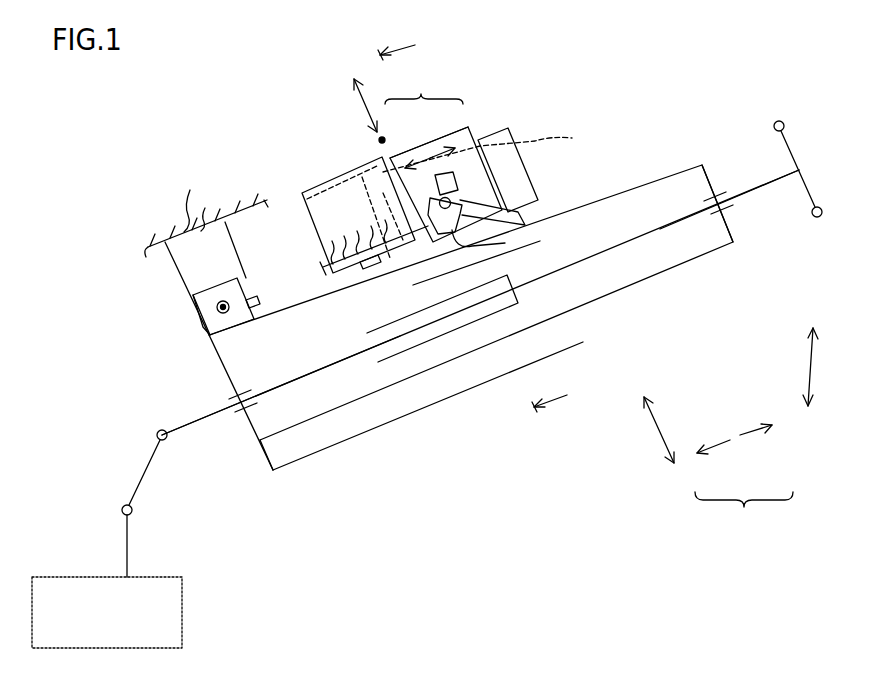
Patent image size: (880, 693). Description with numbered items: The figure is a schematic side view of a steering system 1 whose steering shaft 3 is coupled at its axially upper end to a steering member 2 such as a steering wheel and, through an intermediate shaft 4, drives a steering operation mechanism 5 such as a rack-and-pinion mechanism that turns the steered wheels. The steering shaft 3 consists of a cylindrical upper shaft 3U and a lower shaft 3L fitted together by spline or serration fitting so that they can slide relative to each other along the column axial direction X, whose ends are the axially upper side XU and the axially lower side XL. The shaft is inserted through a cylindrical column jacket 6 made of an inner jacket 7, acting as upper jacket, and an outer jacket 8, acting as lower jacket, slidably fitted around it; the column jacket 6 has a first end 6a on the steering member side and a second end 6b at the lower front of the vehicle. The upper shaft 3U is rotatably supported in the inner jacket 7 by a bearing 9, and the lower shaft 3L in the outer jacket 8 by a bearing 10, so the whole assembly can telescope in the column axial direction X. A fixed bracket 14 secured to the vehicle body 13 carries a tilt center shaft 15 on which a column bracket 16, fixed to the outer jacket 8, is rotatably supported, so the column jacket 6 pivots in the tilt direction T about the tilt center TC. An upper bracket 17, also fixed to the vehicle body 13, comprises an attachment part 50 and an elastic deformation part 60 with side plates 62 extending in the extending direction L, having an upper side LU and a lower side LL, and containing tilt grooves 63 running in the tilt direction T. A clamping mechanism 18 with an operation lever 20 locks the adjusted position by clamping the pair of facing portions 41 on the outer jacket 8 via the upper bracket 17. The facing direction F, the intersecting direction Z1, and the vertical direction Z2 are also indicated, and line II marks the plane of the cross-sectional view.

The steering system 1 is at (708, 112).
The steering member 2 is at (794, 152).
The steering shaft 3 is at (754, 188).
The upper shaft 3U is at (670, 223).
The lower shaft 3L is at (333, 364).
The intermediate shaft 4 is at (143, 468).
The steering operation mechanism 5 is at (183, 602).
The column jacket 6 is at (670, 270).
The first end 6a is at (733, 252).
The second end 6b is at (274, 472).
The inner jacket 7 is at (611, 300).
The outer jacket 8 is at (334, 449).
The bearing 9 is at (721, 198).
The bearing 10 is at (233, 400).
The vehicle body 13 is at (286, 218).
The fixed bracket 14 is at (221, 252).
The tilt center shaft 15 is at (217, 302).
The column bracket 16 is at (250, 303).
The upper bracket 17 is at (477, 118).
The clamping mechanism 18 is at (477, 188).
The operation lever 20 is at (524, 214).
The facing portions 41 is at (541, 167).
The attachment part 50 is at (313, 188).
The elastic deformation part 60 is at (502, 193).
The side plates 62 is at (471, 143).
The tilt grooves 63 is at (505, 243).
The tilt center TC is at (215, 310).
The facing direction F is at (379, 140).
The extending direction L is at (424, 85).
The extending direction lower side LL is at (414, 162).
The extending direction upper side LU is at (439, 155).
The column axial direction X is at (744, 513).
The axially lower side XL is at (720, 447).
The axially upper side XU is at (758, 433).
The intersecting direction Z1 is at (659, 432).
The vertical direction Z2 is at (363, 100).
The tilt direction T is at (809, 364).
The line II- II is at (485, 219).